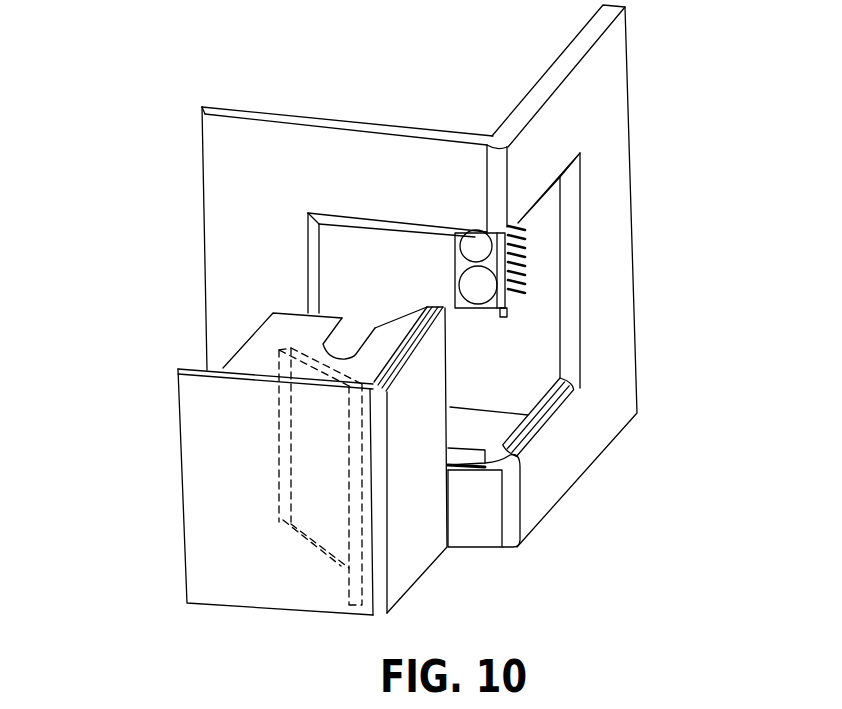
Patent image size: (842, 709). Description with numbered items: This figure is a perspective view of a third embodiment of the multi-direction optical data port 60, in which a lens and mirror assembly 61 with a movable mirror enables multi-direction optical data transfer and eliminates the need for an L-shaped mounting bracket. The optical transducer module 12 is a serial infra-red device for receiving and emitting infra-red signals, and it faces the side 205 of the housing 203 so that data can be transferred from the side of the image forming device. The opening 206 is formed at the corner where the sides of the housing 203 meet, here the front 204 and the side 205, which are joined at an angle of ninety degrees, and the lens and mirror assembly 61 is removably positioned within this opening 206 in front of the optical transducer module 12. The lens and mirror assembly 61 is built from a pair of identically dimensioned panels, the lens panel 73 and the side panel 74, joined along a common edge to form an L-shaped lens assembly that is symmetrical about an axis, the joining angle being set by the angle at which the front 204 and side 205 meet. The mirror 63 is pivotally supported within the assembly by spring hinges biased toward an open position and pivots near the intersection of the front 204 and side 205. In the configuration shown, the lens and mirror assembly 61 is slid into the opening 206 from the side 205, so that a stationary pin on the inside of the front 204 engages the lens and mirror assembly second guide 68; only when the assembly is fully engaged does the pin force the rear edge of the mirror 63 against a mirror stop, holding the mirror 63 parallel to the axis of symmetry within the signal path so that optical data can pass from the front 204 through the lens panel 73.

The multi-direction optical data port 60 is at (104, 276).
The lens and mirror assembly 61 is at (226, 613).
The mirror 63 is at (280, 498).
The lens and mirror assembly second guide 68 is at (380, 325).
The optical transducer module 12 is at (483, 310).
The lens panel 73 is at (426, 447).
The side panel 74 is at (265, 577).
The housing 203 is at (433, 131).
The front 204 is at (620, 75).
The side 205 is at (210, 238).
The opening 206 is at (522, 456).